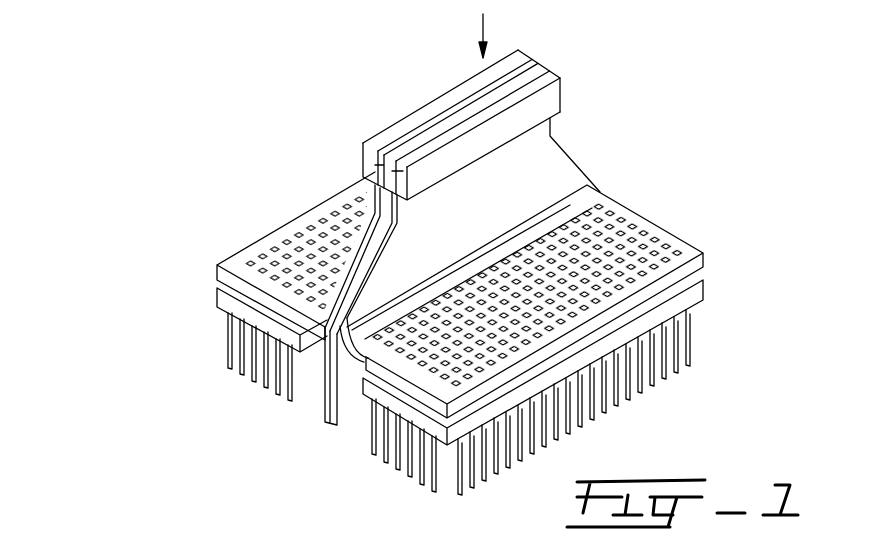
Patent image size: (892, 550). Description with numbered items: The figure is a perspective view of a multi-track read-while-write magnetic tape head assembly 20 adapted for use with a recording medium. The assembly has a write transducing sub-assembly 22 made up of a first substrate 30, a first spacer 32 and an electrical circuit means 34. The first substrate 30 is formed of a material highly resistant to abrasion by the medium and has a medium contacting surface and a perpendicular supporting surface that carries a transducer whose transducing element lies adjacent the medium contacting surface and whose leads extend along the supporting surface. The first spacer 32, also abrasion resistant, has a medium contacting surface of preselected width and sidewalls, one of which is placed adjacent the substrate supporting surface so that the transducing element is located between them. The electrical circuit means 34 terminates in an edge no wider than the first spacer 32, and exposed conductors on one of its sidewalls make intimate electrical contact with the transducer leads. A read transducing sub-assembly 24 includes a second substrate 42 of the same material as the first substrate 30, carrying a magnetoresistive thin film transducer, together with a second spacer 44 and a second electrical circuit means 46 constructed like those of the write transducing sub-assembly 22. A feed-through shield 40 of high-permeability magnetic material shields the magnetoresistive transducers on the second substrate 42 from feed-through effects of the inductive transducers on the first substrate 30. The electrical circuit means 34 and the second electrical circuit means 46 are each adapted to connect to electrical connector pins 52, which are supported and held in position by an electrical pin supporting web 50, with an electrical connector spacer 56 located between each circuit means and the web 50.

The multi-track read-while-write magnetic tape head assembly 20 is at (652, 96).
The write transducing sub-assembly 22 is at (468, 36).
The read transducing sub-assembly 24 is at (582, 150).
The first substrate 30 is at (388, 133).
The first spacer 32 is at (378, 153).
The electrical circuit means 34 is at (350, 263).
The feed-through shield 40 is at (328, 407).
The second substrate 42 is at (562, 93).
The second spacer 44 is at (548, 74).
The second electrical circuit means 46 is at (370, 347).
The electrical pin supporting web 50 is at (220, 300).
The electrical connector pins 52 is at (687, 353).
The electrical connector spacer 56 is at (222, 280).